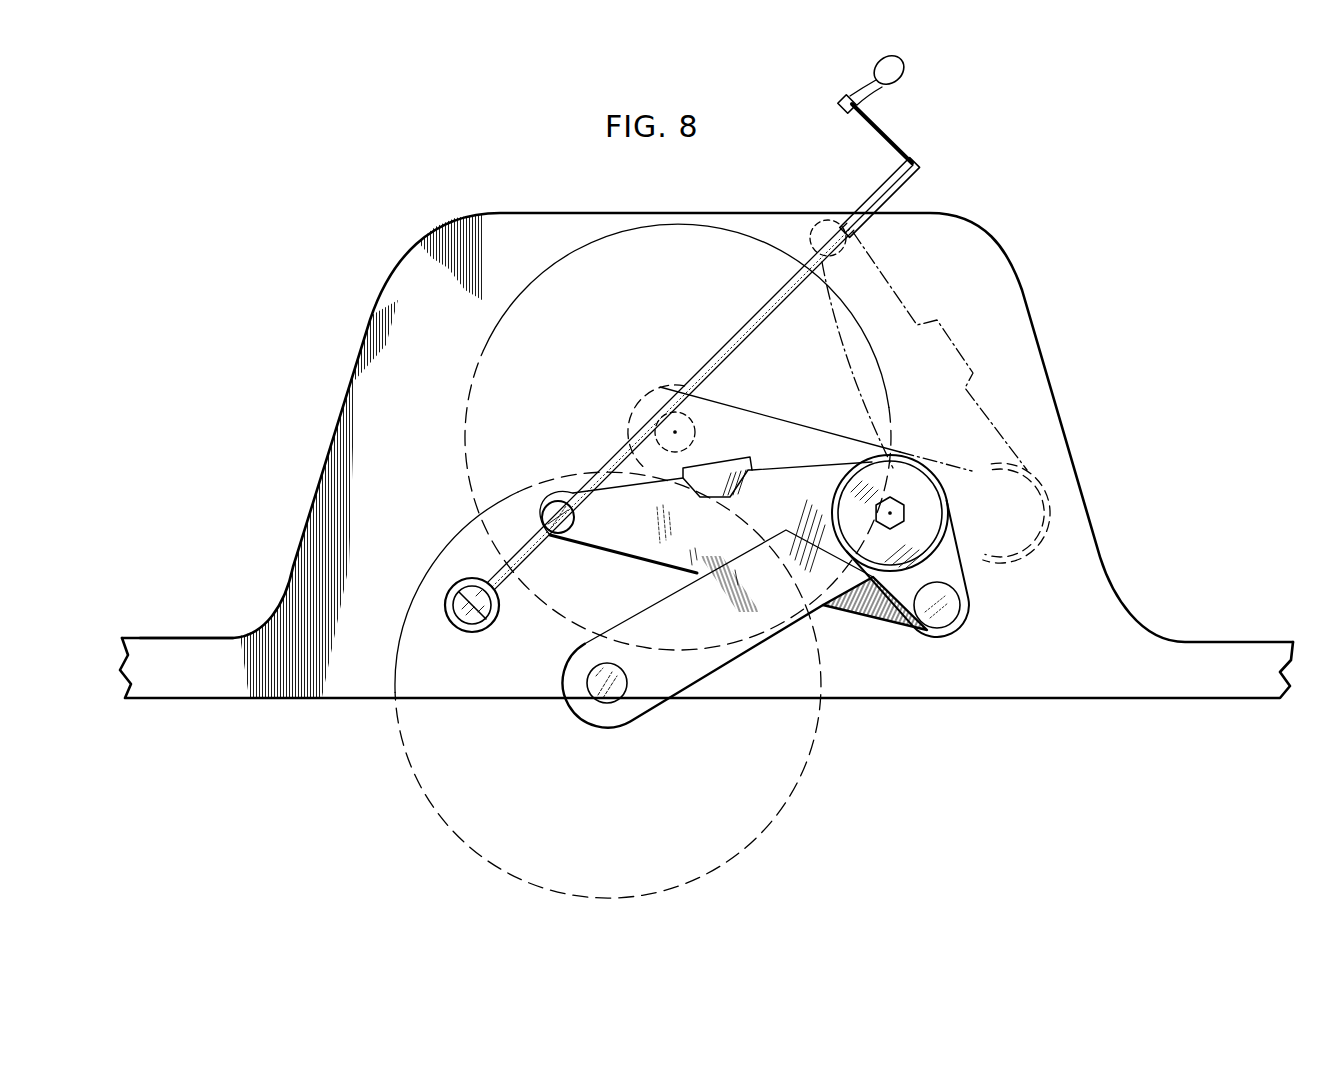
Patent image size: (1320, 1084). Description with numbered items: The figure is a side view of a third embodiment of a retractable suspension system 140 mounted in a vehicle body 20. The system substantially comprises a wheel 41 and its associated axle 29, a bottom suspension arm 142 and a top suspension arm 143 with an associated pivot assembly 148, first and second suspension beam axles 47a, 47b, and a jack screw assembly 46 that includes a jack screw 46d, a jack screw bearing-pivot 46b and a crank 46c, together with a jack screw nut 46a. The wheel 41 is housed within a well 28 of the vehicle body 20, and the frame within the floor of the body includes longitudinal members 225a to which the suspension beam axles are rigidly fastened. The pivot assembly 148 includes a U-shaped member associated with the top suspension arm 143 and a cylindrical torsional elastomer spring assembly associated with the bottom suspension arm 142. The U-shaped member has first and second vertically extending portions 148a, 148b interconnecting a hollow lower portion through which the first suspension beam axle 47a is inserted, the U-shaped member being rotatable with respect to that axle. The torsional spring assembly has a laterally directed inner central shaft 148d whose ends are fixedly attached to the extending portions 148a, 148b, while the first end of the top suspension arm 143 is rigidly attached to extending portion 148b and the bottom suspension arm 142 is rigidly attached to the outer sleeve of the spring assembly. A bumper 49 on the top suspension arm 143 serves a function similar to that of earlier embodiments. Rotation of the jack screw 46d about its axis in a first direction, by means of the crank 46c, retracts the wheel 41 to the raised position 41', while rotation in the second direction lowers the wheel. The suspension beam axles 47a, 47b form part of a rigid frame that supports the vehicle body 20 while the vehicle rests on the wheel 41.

The retractable suspension system 140 is at (637, 198).
The vehicle body 20 is at (1050, 416).
The well 28 is at (1100, 552).
The longitudinal member 225a is at (243, 692).
The wheel 41 is at (591, 685).
The retracted wheel position 41' is at (667, 437).
The jack screw assembly 46 is at (757, 317).
The jack screw nut 46a is at (575, 522).
The jack screw bearing-pivot 46b is at (500, 600).
The crank 46c is at (897, 80).
The jack screw 46d is at (729, 352).
The first suspension beam axle 47a is at (945, 618).
The second suspension beam axle 47b is at (483, 628).
The bumper 49 is at (707, 497).
The axle 29 is at (597, 697).
The bottom suspension arm 142 is at (743, 647).
The top suspension arm 143 is at (892, 628).
The pivot assembly 148 is at (953, 575).
The first vertically extending portion 148a is at (950, 555).
The second vertically extending portion 148b is at (649, 552).
The inner central shaft 148d is at (897, 497).